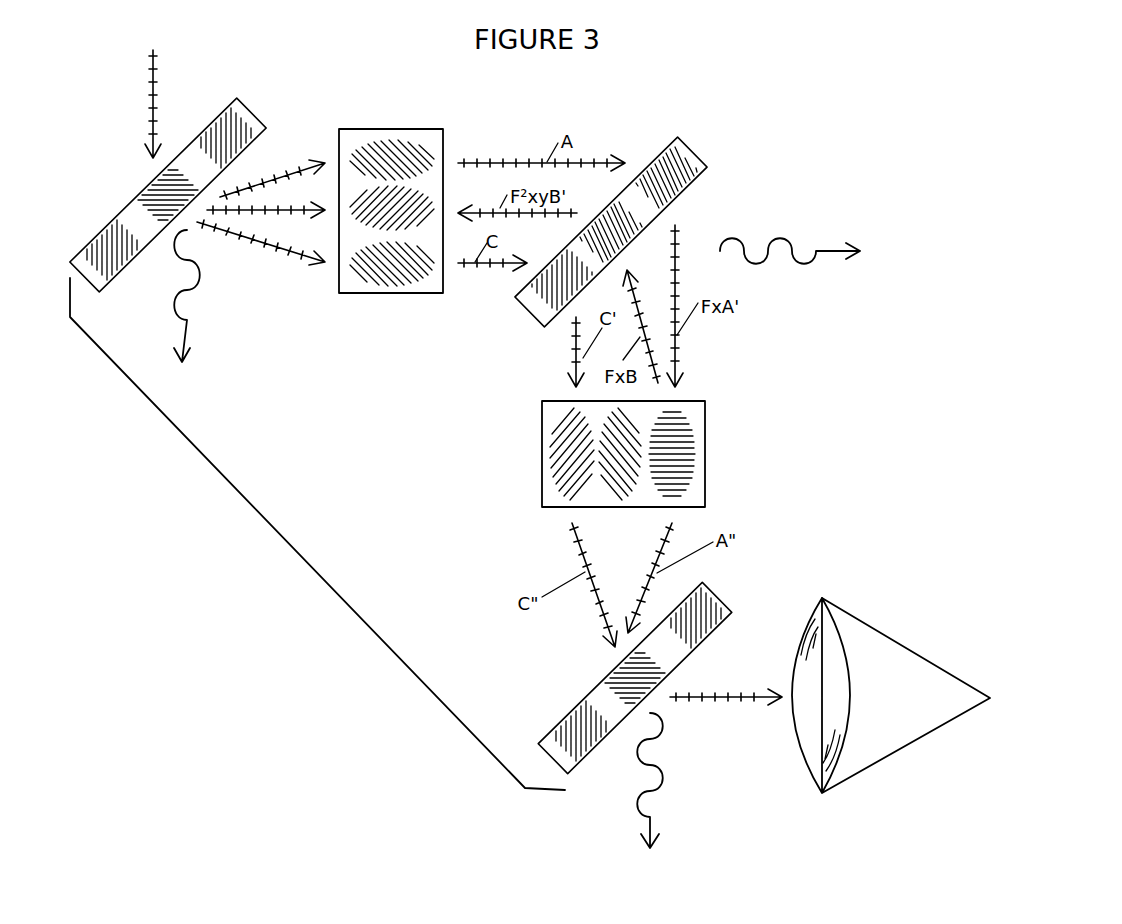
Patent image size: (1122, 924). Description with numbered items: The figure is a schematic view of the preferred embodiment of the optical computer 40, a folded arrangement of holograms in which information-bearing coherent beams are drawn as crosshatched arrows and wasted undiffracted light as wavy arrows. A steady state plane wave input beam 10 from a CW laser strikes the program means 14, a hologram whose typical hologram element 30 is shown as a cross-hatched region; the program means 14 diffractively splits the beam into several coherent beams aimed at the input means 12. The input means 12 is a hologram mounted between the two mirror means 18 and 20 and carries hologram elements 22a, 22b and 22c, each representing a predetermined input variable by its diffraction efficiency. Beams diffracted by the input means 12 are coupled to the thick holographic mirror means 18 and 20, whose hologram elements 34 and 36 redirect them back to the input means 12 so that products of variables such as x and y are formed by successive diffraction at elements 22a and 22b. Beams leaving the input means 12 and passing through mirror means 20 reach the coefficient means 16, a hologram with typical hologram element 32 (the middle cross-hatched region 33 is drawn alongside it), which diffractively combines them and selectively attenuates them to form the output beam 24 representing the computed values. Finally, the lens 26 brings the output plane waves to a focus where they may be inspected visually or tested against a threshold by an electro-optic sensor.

The optical input beam 10 is at (157, 93).
The program means 14 is at (253, 112).
The hologram element of program means 30 is at (110, 270).
The mirror means 18 is at (393, 127).
The hologram element of mirror means 18 34 is at (377, 283).
The input means 12 is at (697, 148).
The hologram element 22a is at (662, 162).
The hologram element 22b is at (637, 217).
The hologram element 22c is at (552, 298).
The mirror means 20 is at (708, 465).
The hologram element of mirror means 20 36 is at (690, 448).
The coefficient means 16 is at (723, 593).
The polarizing region of plate 16 33 is at (610, 687).
The hologram element of coefficient means 32 is at (562, 730).
The output beam 24 is at (728, 692).
The lens 26 is at (805, 770).
The computer 40 is at (297, 555).